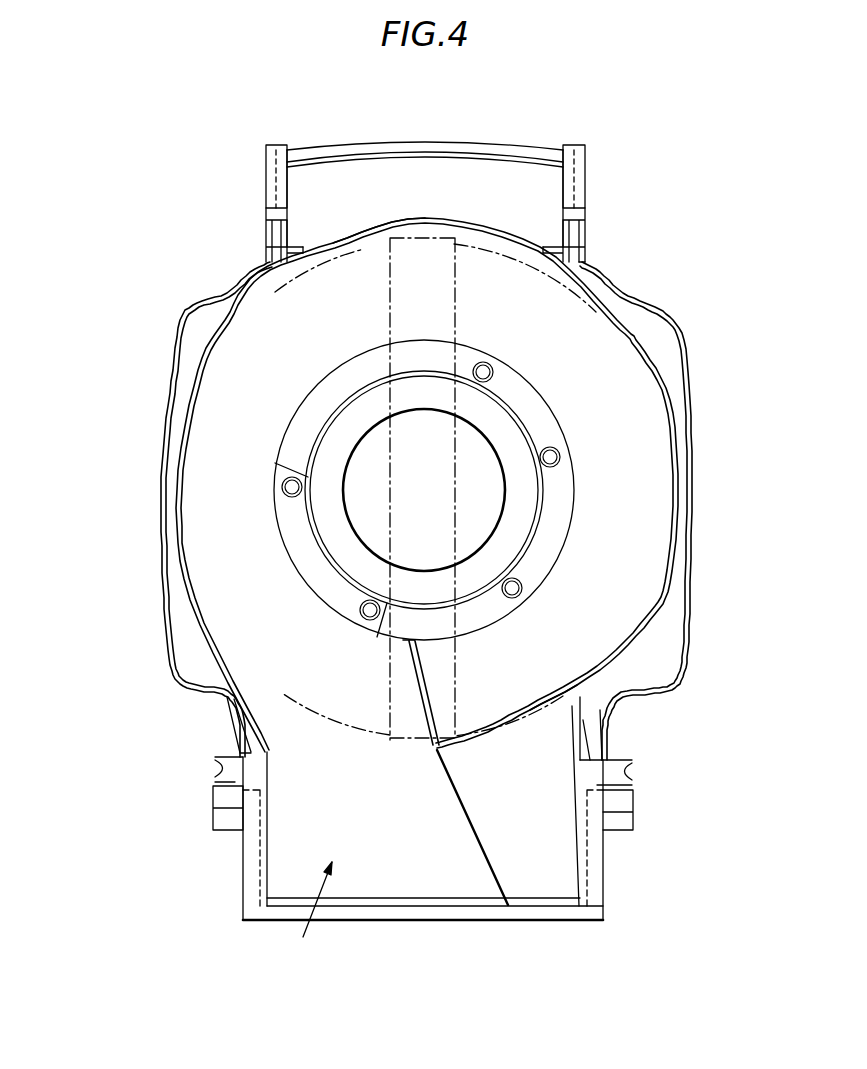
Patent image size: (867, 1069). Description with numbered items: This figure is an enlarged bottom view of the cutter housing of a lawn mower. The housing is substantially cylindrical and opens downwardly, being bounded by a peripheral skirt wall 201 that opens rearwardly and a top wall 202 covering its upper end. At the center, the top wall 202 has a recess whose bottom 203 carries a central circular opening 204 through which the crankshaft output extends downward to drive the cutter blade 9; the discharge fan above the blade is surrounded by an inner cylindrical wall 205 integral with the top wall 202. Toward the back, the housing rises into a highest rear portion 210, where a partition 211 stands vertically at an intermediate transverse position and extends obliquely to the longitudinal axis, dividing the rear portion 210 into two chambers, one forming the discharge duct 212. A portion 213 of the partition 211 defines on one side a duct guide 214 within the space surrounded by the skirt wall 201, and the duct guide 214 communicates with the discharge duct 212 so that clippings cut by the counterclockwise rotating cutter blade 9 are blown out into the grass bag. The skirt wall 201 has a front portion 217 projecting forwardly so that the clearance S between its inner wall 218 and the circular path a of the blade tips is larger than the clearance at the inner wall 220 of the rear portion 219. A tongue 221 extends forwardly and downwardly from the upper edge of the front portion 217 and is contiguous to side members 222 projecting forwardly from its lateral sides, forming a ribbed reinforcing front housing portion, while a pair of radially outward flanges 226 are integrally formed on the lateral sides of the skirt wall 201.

The peripheral skirt wall 201 is at (587, 252).
The top wall 202 is at (192, 512).
The bottom 203 is at (493, 427).
The central circular opening 204 is at (437, 409).
The inner cylindrical wall 205 is at (500, 398).
The rear portion 210 is at (605, 878).
The partition 211 is at (475, 818).
The discharge duct 212 is at (308, 912).
The portion 213 is at (427, 702).
The duct guide 214 is at (338, 694).
The front portion 217 is at (515, 236).
The inner wall 218 is at (373, 232).
The rear portion 219 is at (536, 725).
The inner wall 220 is at (558, 710).
The tongue 221 is at (470, 170).
The side members 222 is at (268, 173).
The flanges 226 is at (166, 371).
The cutter blade 9 is at (388, 306).
The clearance S is at (417, 228).
The circular path a is at (533, 268).